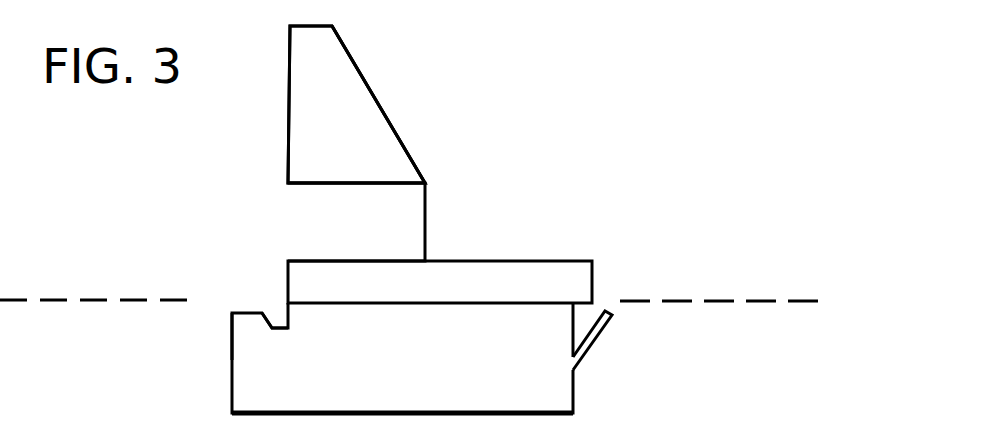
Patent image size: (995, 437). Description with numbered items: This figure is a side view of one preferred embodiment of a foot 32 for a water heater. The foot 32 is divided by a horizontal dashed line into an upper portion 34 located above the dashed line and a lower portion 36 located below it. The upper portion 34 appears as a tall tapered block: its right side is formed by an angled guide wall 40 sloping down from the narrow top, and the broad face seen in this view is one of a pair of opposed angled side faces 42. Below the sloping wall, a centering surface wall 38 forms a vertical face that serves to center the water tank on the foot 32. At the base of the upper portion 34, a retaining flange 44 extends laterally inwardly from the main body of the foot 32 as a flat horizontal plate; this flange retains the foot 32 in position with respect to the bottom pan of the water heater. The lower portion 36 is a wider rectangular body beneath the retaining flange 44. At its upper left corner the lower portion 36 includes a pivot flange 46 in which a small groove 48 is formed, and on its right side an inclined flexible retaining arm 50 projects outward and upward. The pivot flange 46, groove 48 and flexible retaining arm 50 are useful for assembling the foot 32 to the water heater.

The foot 32 is at (548, 74).
The upper portion 34 is at (280, 118).
The lower portion 36 is at (222, 377).
The centering surface wall 38 is at (425, 221).
The angled guide wall 40 is at (362, 75).
The angled side face 42 is at (353, 152).
The retaining flange 44 is at (592, 268).
The pivot flange 46 is at (232, 336).
The groove 48 is at (282, 326).
The flexible retaining arm 50 is at (598, 338).